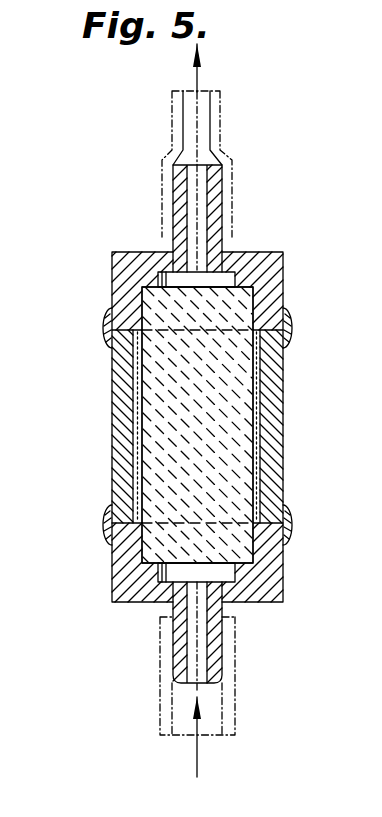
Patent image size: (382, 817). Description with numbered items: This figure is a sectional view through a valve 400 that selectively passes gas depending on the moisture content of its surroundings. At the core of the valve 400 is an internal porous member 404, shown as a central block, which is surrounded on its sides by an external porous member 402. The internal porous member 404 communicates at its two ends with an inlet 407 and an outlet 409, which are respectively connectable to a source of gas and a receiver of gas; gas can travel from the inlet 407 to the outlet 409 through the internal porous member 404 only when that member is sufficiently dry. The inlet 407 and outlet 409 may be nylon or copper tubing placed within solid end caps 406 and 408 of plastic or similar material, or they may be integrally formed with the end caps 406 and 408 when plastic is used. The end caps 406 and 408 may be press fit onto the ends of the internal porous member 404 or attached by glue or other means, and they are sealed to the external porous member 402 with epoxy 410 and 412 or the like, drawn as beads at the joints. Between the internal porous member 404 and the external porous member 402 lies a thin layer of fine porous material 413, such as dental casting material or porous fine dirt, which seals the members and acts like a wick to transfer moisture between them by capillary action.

The valve 400 is at (103, 427).
The external porous member 402 is at (283, 378).
The internal porous member 404 is at (218, 431).
The end cap 406 is at (120, 563).
The inlet 407 is at (218, 645).
The end cap 408 is at (120, 278).
The outlet 409 is at (213, 188).
The epoxy 410 is at (105, 516).
The epoxy 412 is at (292, 321).
The fine porous material 413 is at (257, 478).